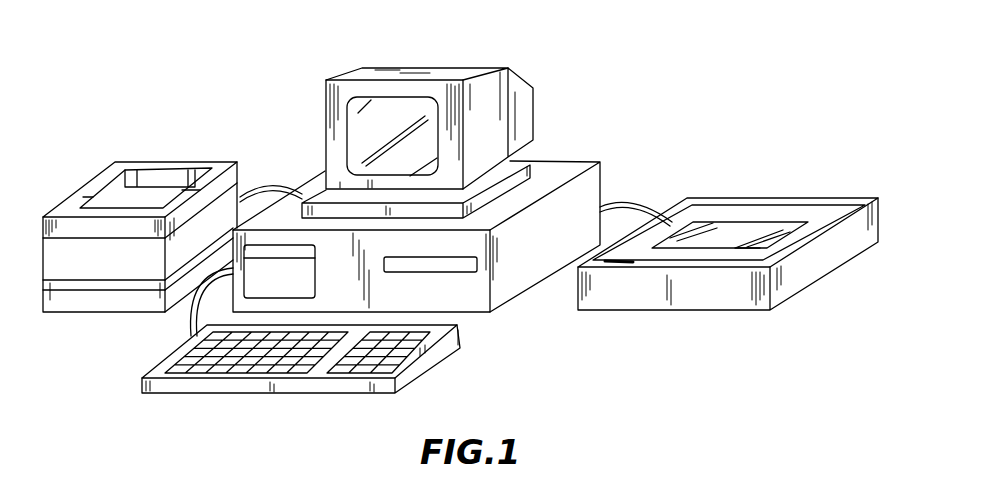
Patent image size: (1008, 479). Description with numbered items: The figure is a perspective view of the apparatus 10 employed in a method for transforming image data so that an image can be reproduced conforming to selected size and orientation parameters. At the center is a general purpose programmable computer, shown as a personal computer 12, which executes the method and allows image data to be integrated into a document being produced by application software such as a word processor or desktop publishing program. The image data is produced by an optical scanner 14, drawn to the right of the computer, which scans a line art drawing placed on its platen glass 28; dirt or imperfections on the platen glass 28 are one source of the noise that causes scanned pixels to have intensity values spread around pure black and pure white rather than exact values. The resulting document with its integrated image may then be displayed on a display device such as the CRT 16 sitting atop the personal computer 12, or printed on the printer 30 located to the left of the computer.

The apparatus 10 is at (231, 76).
The personal computer 12 is at (582, 159).
The optical scanner 14 is at (795, 195).
The CRT 16 is at (477, 64).
The platen glass 28 is at (719, 222).
The printer 30 is at (192, 157).